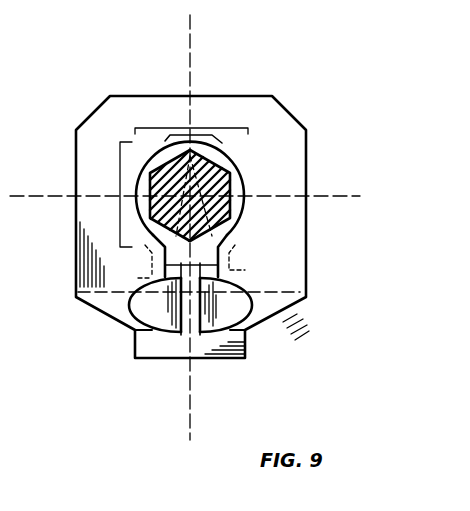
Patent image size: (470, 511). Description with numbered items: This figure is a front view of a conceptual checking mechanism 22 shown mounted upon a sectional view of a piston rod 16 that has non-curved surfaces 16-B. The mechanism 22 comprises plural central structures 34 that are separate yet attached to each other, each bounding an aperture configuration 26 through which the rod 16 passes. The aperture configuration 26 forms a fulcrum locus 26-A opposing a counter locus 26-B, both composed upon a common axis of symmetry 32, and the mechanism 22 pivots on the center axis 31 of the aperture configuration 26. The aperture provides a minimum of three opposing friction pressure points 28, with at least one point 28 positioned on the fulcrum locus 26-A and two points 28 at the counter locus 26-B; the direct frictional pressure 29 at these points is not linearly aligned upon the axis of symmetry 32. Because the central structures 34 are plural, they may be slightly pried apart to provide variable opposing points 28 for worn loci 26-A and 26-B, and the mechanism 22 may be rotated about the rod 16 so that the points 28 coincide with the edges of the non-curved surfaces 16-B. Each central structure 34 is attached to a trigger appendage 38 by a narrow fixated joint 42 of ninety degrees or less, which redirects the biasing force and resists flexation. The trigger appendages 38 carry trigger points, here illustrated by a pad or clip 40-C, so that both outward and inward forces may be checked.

The checking mechanism 22 is at (186, 191).
The common axis of symmetry 32 is at (192, 40).
The center axis 31 is at (66, 196).
The central structure 34 is at (288, 127).
The fixated joint 42 is at (292, 291).
The trigger appendage 38 is at (268, 325).
The direct frictional pressure 29 is at (182, 175).
The piston rod 16 is at (256, 194).
The non-curved surfaces 16-B is at (230, 190).
The aperture configuration 26 is at (120, 180).
The counter locus 26-B is at (196, 128).
The fulcrum locus 26-A is at (210, 267).
The friction pressure points 28 is at (222, 143).
The pad or clip 40-C is at (168, 323).